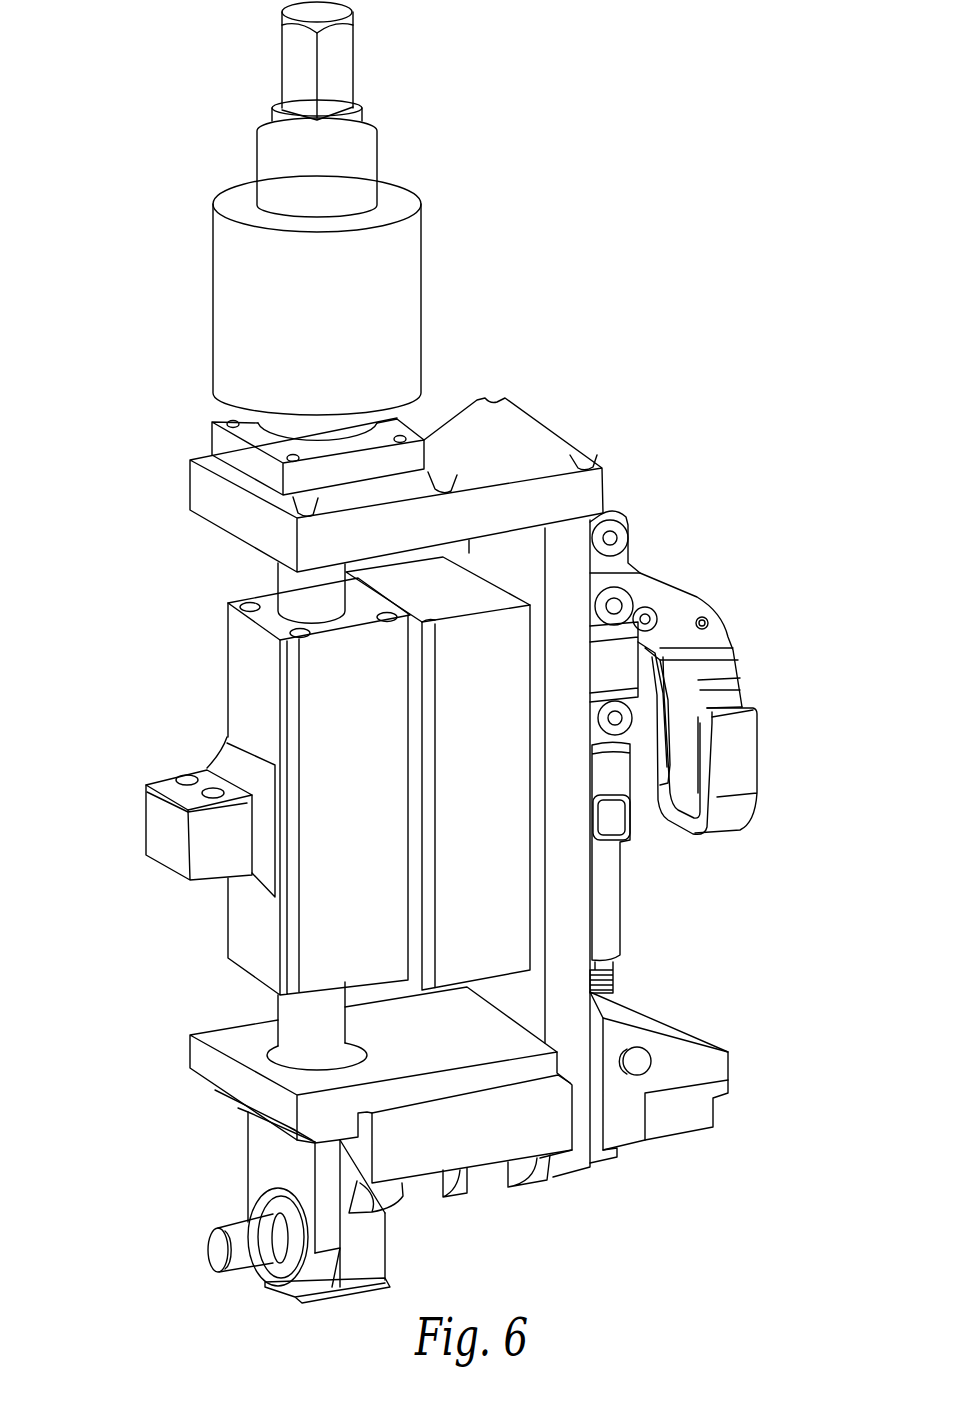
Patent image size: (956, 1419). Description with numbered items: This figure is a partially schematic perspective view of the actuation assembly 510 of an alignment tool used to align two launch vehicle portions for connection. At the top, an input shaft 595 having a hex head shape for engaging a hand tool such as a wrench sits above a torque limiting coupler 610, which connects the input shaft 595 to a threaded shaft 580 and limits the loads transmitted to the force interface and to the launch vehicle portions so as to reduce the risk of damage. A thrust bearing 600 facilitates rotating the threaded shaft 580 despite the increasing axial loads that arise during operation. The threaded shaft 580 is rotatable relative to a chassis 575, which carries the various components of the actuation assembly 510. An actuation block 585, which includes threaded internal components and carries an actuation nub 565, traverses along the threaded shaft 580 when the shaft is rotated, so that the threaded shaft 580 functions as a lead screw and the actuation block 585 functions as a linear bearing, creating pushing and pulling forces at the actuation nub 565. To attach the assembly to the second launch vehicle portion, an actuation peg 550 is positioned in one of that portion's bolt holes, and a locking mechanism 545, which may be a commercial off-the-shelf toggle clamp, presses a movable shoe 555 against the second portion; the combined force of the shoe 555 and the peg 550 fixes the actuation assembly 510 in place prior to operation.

The actuation assembly 510 is at (648, 416).
The locking mechanism 545 is at (733, 542).
The actuation peg 550 is at (237, 1226).
The movable shoe 555 is at (725, 1053).
The actuation nub 565 is at (160, 820).
The chassis 575 is at (515, 432).
The threaded shaft 580 is at (276, 578).
The actuation block 585 is at (252, 680).
The input shaft 595 is at (340, 78).
The thrust bearing 600 is at (212, 433).
The torque limiting coupler 610 is at (240, 292).